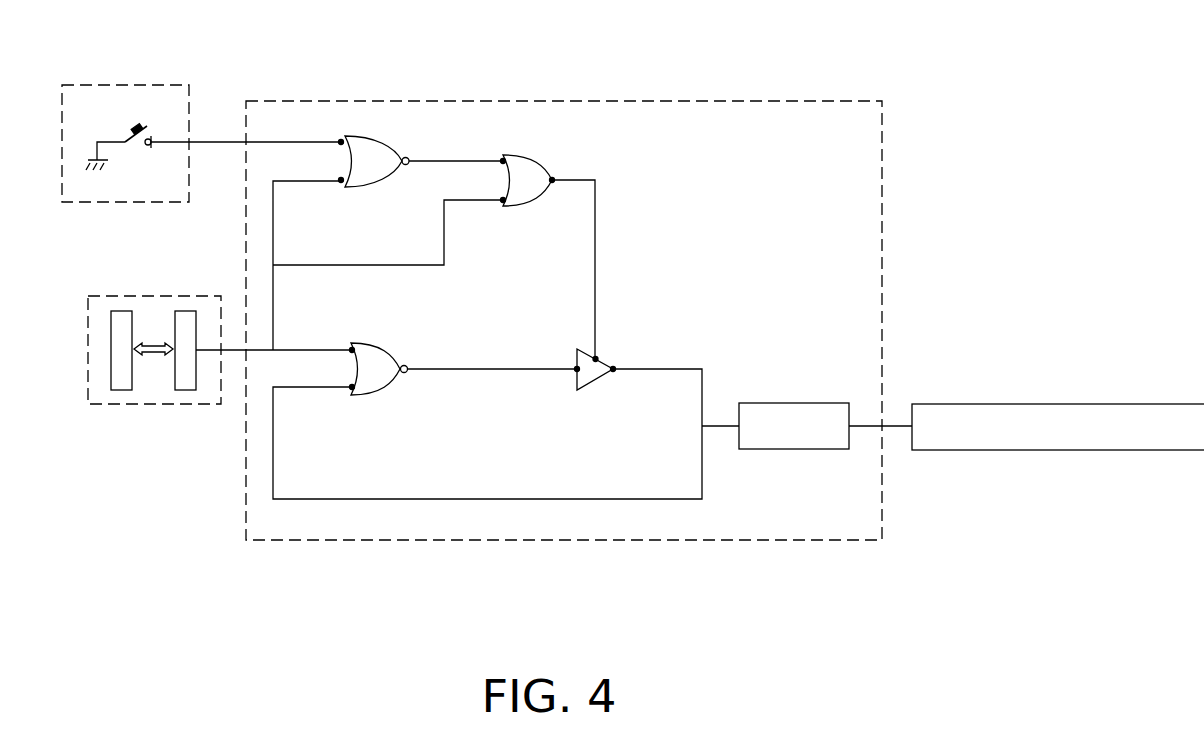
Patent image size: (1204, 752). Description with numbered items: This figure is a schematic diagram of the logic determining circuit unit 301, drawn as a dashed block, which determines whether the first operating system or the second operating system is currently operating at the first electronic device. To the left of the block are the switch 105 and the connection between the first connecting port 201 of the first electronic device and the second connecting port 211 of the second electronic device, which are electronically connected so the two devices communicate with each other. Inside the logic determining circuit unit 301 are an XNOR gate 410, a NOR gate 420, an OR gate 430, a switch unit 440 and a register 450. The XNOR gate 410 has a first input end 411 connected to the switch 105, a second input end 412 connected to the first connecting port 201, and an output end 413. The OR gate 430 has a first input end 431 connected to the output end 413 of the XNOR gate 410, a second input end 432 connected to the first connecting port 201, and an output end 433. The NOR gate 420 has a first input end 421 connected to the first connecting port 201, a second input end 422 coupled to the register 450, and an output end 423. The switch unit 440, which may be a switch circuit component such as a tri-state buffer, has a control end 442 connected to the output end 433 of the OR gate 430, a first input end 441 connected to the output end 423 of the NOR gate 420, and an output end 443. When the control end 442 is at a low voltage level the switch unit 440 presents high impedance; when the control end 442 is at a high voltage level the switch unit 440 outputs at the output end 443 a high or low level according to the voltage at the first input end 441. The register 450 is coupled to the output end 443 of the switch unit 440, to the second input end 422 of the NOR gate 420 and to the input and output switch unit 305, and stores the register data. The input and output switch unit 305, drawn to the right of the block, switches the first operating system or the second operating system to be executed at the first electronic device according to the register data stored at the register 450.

The switch 105 is at (122, 86).
The first connecting port 201 is at (185, 390).
The second connecting port 211 is at (121, 390).
The logic determining circuit unit 301 is at (882, 143).
The input and output switch unit 305 is at (1024, 404).
The XNOR gate 410 is at (385, 188).
The first input end of the XNOR gate 411 is at (340, 138).
The second input end of the XNOR gate 412 is at (340, 183).
The output end of the XNOR gate 413 is at (406, 157).
The NOR gate 420 is at (393, 392).
The first input end of the NOR gate 421 is at (350, 346).
The second input end of the NOR gate 422 is at (352, 392).
The output end of the NOR gate 423 is at (408, 367).
The OR gate 430 is at (538, 205).
The first input end of the OR gate 431 is at (503, 157).
The second input end of the OR gate 432 is at (503, 203).
The output end of the OR gate 433 is at (553, 178).
The switch unit 440 is at (597, 380).
The first input end of the switch unit 441 is at (576, 372).
The control end of the switch unit 442 is at (594, 357).
The output end of the switch unit 443 is at (615, 368).
The register 450 is at (797, 403).